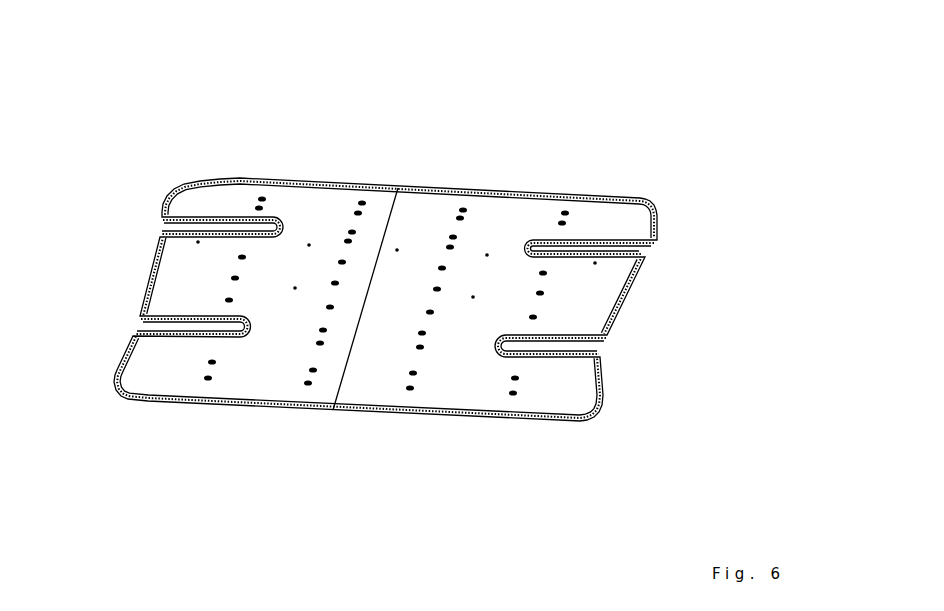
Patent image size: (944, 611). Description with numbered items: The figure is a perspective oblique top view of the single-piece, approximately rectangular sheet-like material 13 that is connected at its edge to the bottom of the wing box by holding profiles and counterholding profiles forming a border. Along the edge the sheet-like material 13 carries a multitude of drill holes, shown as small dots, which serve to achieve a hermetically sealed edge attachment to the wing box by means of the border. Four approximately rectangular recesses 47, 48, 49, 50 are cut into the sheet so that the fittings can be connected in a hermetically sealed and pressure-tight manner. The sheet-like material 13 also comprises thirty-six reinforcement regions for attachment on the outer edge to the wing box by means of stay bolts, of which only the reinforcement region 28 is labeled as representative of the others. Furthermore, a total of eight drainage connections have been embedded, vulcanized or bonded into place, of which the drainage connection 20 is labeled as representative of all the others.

The sheet-like material 13 is at (439, 151).
The drainage connection 20 is at (384, 291).
The reinforcement region 28 is at (404, 391).
The recess 47 is at (582, 348).
The recess 48 is at (623, 248).
The recess 49 is at (160, 221).
The recess 50 is at (163, 324).